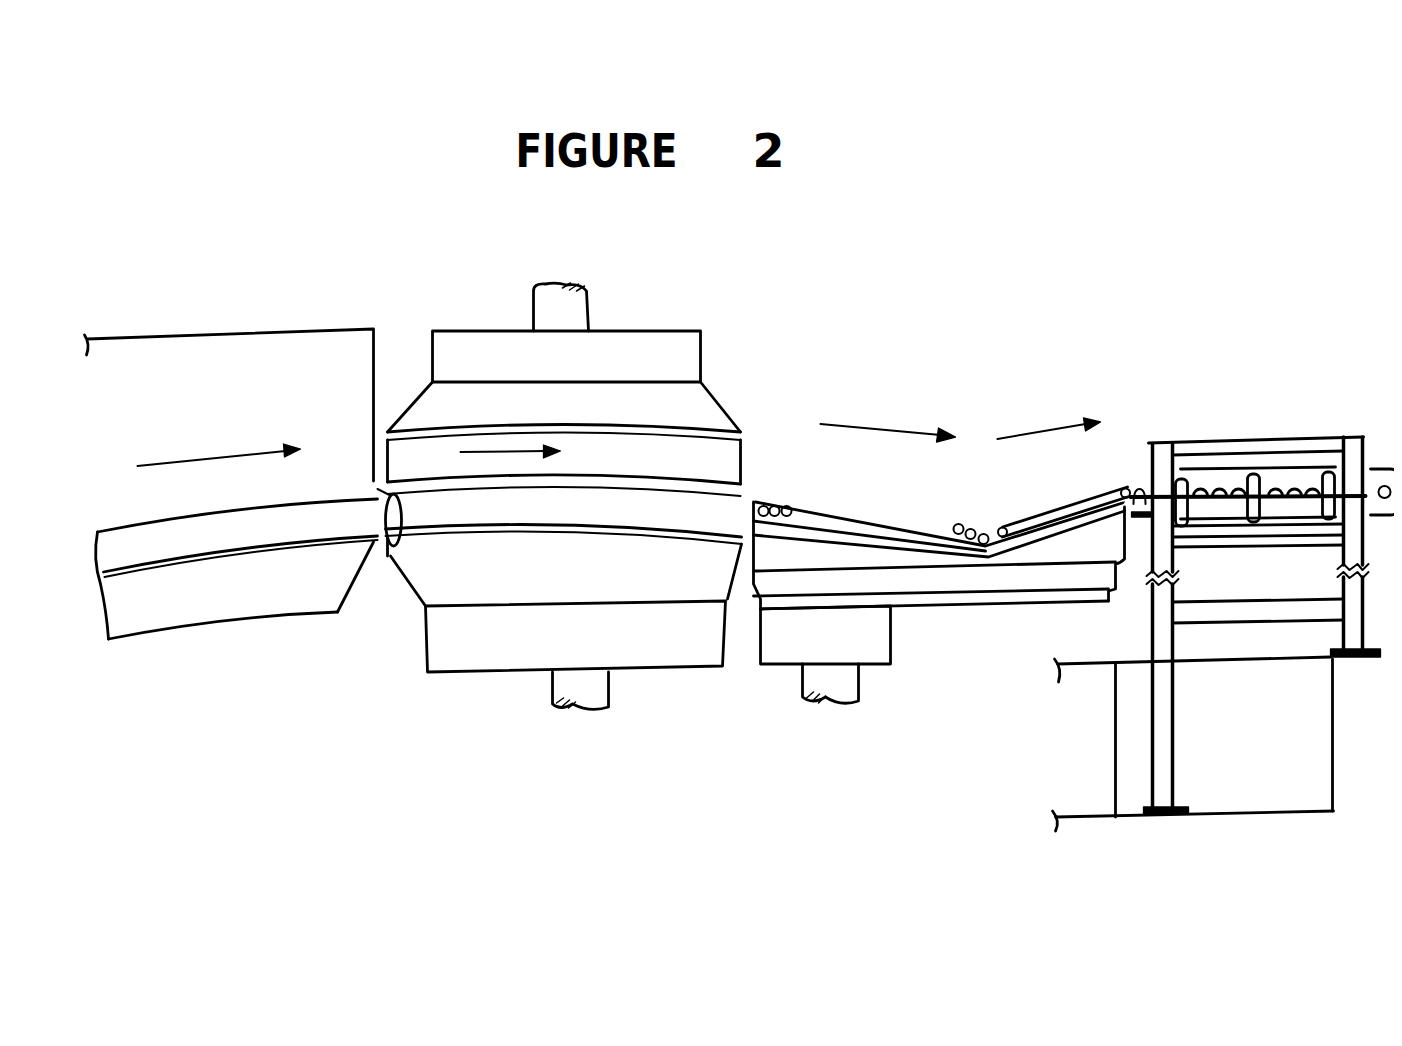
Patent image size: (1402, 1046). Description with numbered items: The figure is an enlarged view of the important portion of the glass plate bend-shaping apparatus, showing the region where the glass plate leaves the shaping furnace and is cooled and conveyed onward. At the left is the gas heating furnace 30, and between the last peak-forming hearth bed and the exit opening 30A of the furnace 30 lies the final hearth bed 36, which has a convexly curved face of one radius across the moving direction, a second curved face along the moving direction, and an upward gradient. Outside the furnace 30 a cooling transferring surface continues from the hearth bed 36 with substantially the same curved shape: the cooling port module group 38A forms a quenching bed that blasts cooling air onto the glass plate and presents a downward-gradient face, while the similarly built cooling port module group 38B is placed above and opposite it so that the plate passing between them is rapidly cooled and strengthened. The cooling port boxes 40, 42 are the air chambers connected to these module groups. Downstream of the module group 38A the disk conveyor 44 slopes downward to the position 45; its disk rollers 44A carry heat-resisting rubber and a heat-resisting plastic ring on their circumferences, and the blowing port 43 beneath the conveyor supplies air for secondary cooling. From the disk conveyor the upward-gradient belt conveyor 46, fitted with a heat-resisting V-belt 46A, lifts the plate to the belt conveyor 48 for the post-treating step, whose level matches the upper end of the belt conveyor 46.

The gas heating furnace 30 is at (257, 355).
The exit opening 30A is at (390, 560).
The final hearth bed 36 is at (227, 523).
The cooling port module group 38A is at (663, 513).
The cooling port module group 38B is at (712, 473).
The cooling port box 40 is at (690, 397).
The cooling port box 42 is at (487, 587).
The blowing port 43 is at (868, 633).
The disk conveyor 44 is at (888, 507).
The disk rollers 44A is at (790, 506).
The position 45 is at (996, 528).
The belt conveyor 46 is at (1102, 498).
The heat-resisting V-belt 46A is at (1052, 512).
The belt conveyor 48 is at (1254, 449).